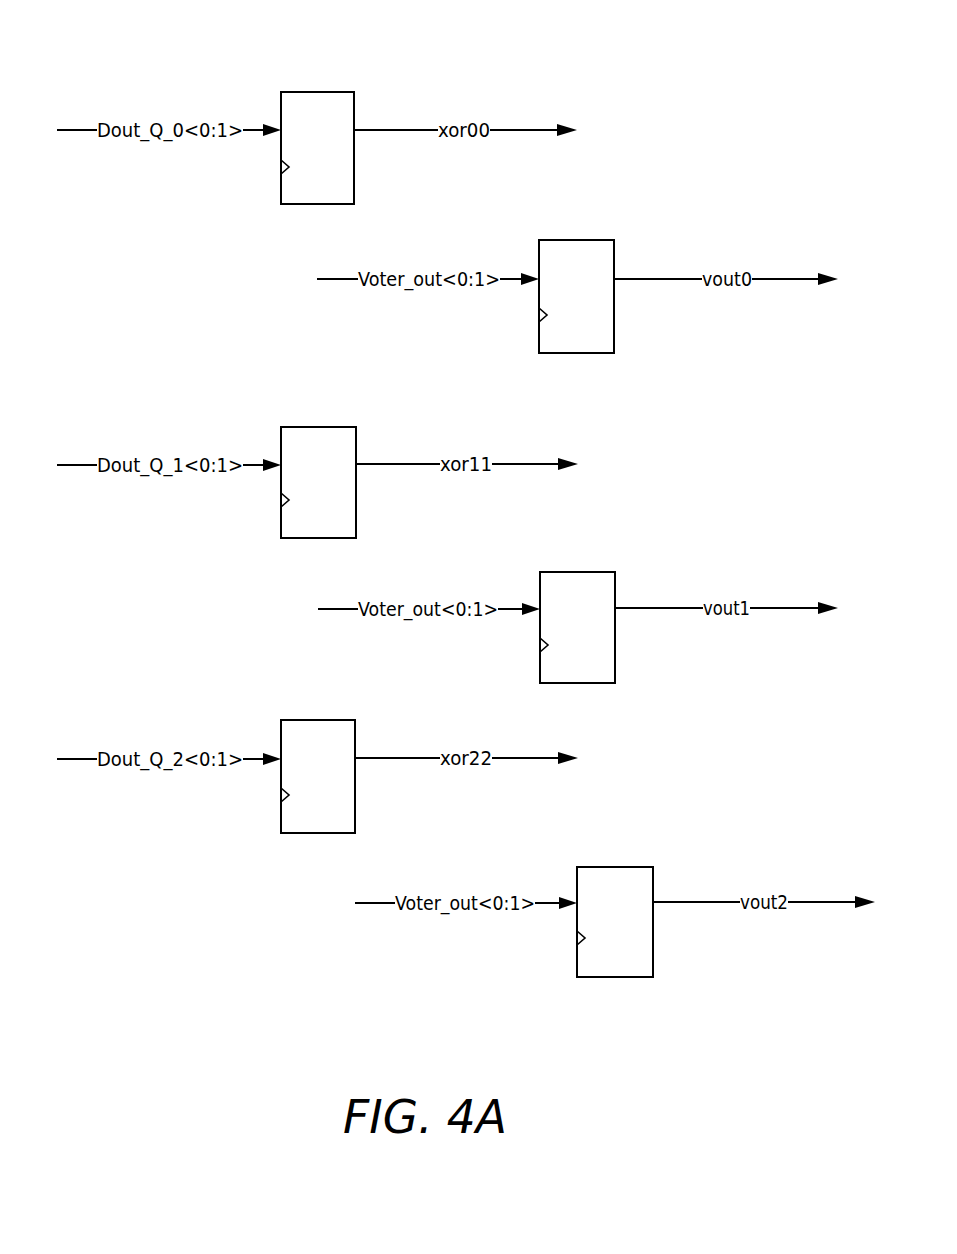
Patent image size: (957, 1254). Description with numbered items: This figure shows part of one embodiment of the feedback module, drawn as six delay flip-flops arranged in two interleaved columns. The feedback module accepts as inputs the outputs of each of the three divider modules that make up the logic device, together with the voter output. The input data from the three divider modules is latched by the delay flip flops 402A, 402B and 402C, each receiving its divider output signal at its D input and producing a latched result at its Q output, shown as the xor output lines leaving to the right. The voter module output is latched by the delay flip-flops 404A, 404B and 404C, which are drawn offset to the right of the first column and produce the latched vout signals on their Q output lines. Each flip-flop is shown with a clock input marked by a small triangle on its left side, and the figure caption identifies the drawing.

The delay flip flop 402A is at (317, 92).
The delay flip flop 402B is at (318, 427).
The delay flip flop 402C is at (318, 720).
The delay flip-flop 404A is at (578, 240).
The delay flip-flop 404B is at (578, 572).
The delay flip-flop 404C is at (617, 867).